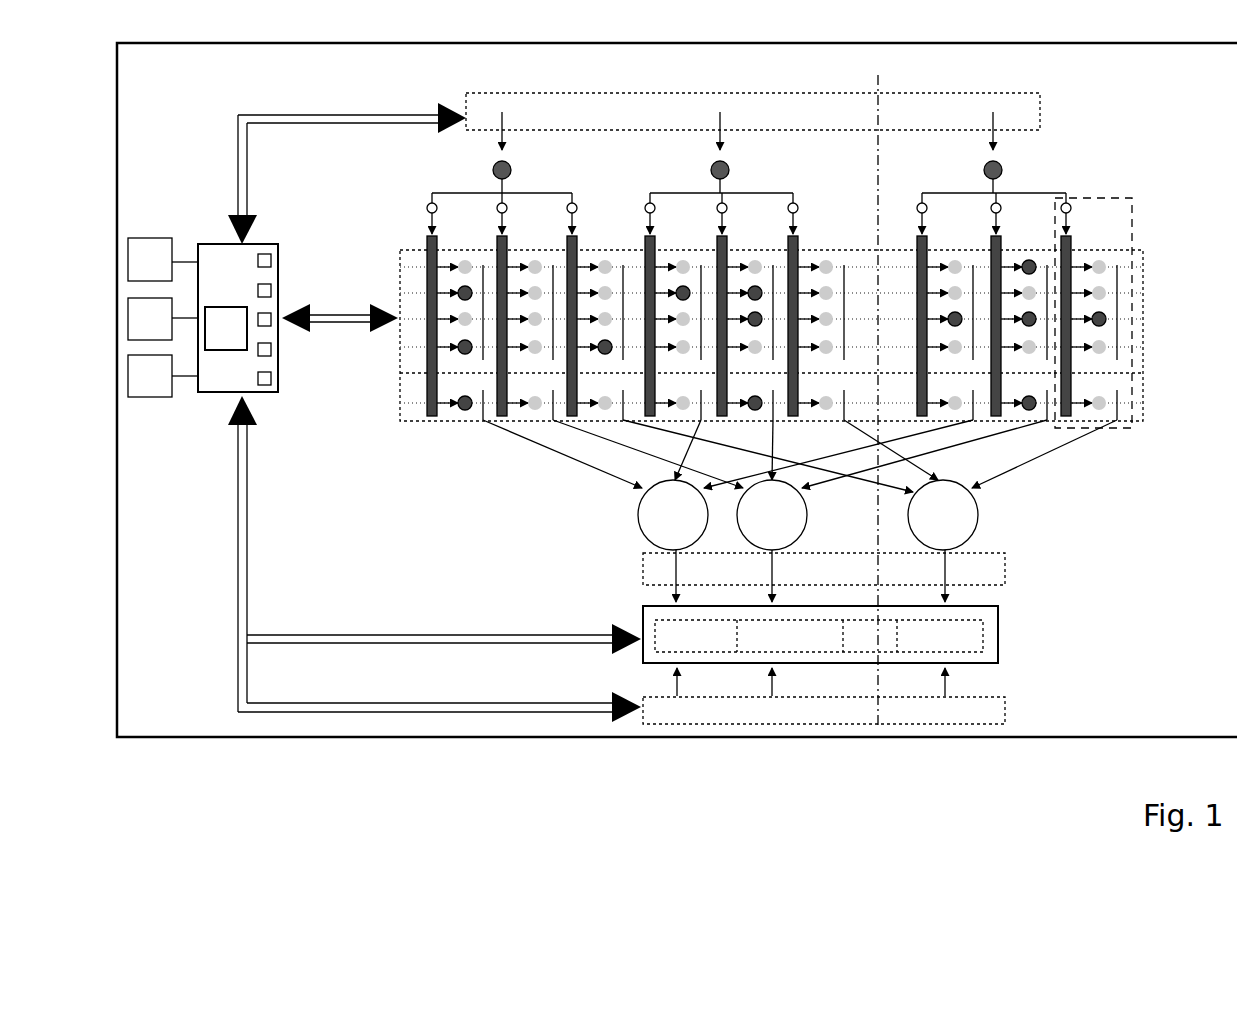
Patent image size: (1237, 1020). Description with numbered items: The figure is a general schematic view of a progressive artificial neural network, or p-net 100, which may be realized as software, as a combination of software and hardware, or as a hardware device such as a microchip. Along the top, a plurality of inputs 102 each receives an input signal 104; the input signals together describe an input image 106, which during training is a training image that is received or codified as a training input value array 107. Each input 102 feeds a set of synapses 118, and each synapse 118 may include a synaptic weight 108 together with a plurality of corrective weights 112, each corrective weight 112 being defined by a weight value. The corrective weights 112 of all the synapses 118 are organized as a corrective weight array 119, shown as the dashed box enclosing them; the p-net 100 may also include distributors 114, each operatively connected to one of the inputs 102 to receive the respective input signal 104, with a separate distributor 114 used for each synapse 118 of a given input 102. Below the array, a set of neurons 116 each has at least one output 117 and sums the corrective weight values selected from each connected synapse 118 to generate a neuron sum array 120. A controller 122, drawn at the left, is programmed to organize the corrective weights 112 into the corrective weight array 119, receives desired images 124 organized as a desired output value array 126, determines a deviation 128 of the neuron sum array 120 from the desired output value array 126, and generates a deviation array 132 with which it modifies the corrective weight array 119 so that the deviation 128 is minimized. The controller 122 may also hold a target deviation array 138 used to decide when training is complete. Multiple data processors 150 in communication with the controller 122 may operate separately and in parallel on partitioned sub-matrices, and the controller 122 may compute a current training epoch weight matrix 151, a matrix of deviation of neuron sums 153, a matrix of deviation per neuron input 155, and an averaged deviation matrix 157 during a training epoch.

The progressive artificial neural network 100 is at (1222, 137).
The input 102 is at (512, 170).
The input signal 104 is at (502, 118).
The input image 106 is at (598, 92).
The training input value array 107 is at (1040, 111).
The synaptic weight 108 is at (427, 208).
The corrective weight 112 is at (458, 318).
The distributor 114 is at (440, 346).
The neuron 116 is at (960, 516).
The output 117 is at (676, 566).
The synapse 118 is at (1135, 222).
The corrective weight array 119 is at (1148, 335).
The neuron sum array 120 is at (1010, 570).
The controller 122 is at (214, 398).
The desired image 124 is at (955, 688).
The desired output value array 126 is at (1010, 716).
The deviation 128 is at (986, 642).
The deviation array 132 is at (986, 631).
The target deviation array 138 is at (264, 254).
The data processor 150 is at (228, 305).
The current training epoch weight matrix 151 is at (273, 284).
The matrix of deviation of neuron sums 153 is at (266, 326).
The matrix of deviation per neuron input 155 is at (266, 356).
The averaged deviation matrix 157 is at (266, 385).